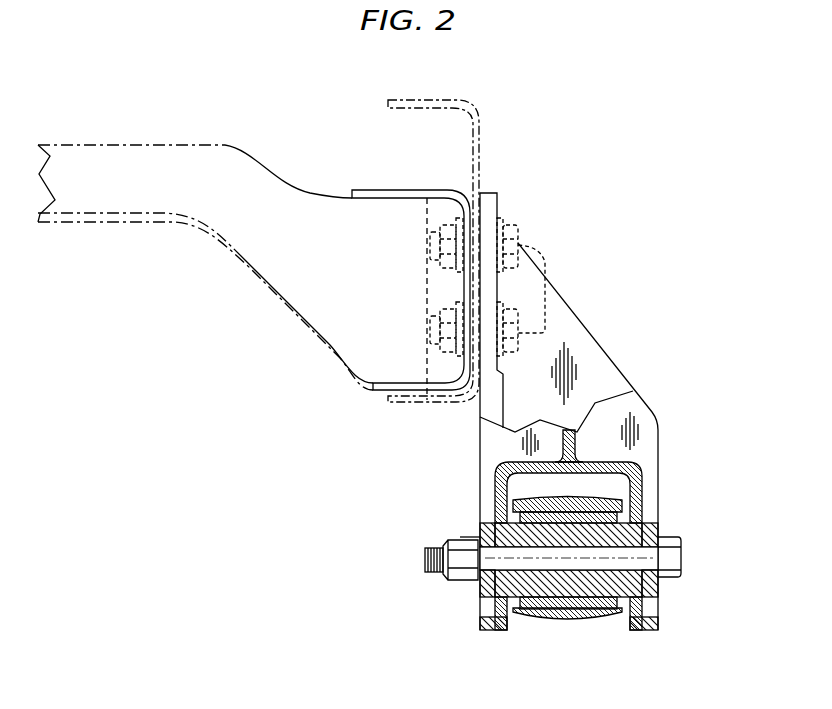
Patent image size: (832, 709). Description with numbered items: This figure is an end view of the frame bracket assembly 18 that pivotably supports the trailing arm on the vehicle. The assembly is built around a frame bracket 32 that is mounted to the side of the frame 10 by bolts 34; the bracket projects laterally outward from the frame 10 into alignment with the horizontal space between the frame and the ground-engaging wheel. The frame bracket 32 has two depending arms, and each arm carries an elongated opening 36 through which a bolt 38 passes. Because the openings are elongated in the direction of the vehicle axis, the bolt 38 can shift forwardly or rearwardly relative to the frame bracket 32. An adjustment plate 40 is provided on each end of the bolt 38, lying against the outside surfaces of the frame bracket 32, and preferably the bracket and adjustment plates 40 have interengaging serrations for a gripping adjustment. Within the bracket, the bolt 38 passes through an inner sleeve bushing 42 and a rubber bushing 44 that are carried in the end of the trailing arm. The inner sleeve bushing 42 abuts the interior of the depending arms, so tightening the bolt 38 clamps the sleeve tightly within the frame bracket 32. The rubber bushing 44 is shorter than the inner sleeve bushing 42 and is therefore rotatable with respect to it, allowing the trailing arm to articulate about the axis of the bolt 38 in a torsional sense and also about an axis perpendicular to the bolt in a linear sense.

The frame 10 is at (408, 100).
The frame bracket assembly 18 is at (630, 325).
The frame bracket 32 is at (585, 332).
The bolts 34 is at (558, 278).
The elongated opening 36 is at (645, 523).
The bolt 38 is at (645, 557).
The adjustment plate 40 is at (481, 590).
The inner sleeve bushing 42 is at (545, 585).
The rubber bushing 44 is at (586, 500).